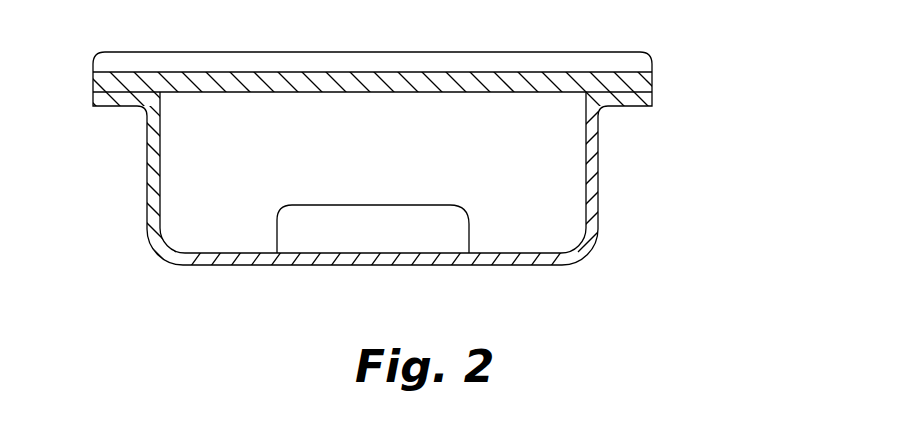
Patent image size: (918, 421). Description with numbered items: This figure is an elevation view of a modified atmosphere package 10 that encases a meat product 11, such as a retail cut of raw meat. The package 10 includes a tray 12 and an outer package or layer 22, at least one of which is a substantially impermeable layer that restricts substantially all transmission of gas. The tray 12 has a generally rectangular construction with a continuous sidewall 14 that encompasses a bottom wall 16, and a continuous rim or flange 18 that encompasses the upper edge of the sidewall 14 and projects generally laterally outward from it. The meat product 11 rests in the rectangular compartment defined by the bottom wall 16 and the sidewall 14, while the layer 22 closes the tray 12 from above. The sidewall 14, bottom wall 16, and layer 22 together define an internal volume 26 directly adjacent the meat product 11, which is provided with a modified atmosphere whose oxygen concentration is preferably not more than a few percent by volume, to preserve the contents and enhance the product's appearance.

The modified atmosphere package 10 is at (700, 95).
The meat product 11 is at (425, 230).
The tray 12 is at (560, 265).
The continuous sidewall 14 is at (146, 182).
The bottom wall 16 is at (252, 265).
The continuous rim or flange 18 is at (108, 107).
The outer package or layer 22 is at (652, 82).
The internal volume 26 is at (552, 174).